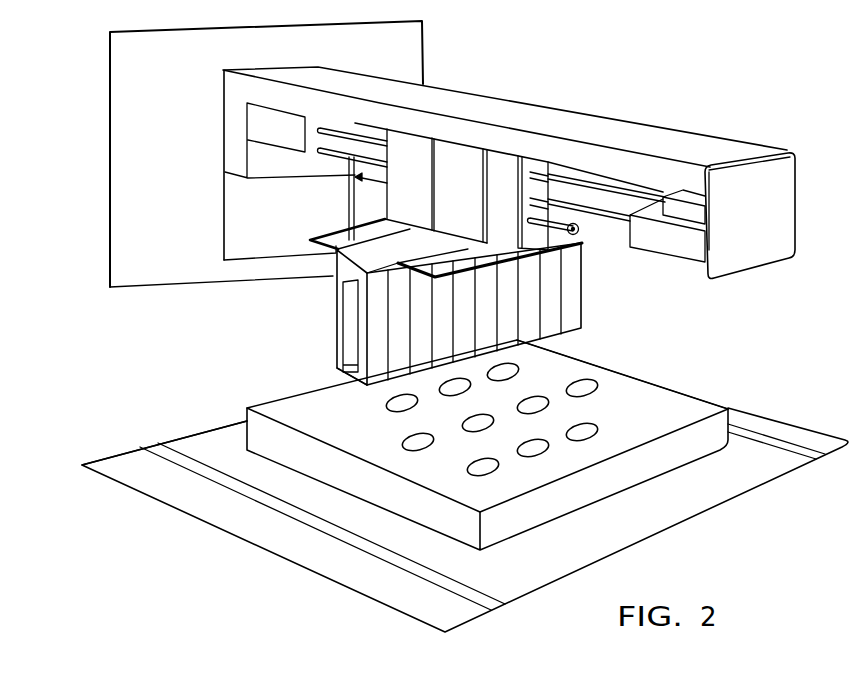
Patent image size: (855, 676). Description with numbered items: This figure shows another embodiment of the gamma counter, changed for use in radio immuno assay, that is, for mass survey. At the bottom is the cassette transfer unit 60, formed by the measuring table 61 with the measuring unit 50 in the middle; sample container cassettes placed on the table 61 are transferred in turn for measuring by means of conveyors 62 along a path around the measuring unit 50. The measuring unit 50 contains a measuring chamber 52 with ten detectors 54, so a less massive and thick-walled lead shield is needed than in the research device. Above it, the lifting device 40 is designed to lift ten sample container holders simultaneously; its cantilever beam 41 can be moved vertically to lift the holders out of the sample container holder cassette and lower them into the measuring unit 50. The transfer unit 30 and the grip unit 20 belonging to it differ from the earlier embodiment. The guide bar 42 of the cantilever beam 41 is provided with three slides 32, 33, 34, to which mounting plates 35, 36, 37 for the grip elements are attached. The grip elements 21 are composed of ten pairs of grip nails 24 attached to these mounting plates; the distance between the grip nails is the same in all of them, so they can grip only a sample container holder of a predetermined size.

The grip unit 20 is at (417, 344).
The grip elements 21 is at (350, 394).
The grip nails 24 is at (358, 373).
The transfer unit 30 is at (463, 122).
The slide 32 is at (410, 150).
The slide 33 is at (462, 167).
The slide 34 is at (507, 170).
The mounting plate 35 is at (343, 235).
The mounting plate 36 is at (398, 237).
The mounting plate 37 is at (458, 263).
The lifting device 40 is at (557, 162).
The cantilever beam 41 is at (617, 132).
The guide bar 42 is at (633, 198).
The measuring unit 50 is at (523, 439).
The measuring chamber 52 is at (697, 407).
The detectors 54 is at (583, 386).
The cassette transfer unit 60 is at (454, 517).
The measuring table 61 is at (127, 460).
The conveyors 62 is at (273, 503).